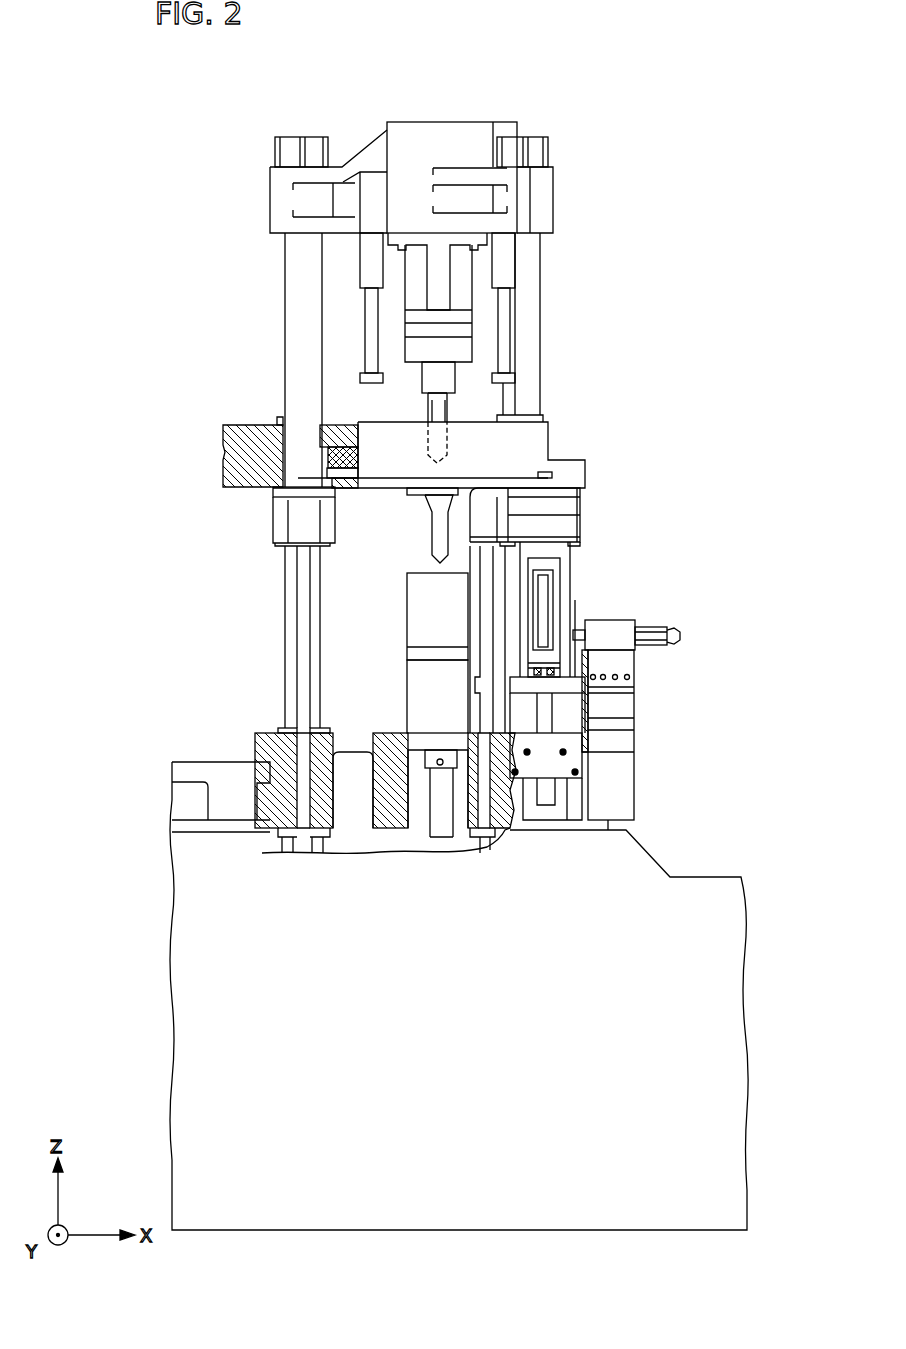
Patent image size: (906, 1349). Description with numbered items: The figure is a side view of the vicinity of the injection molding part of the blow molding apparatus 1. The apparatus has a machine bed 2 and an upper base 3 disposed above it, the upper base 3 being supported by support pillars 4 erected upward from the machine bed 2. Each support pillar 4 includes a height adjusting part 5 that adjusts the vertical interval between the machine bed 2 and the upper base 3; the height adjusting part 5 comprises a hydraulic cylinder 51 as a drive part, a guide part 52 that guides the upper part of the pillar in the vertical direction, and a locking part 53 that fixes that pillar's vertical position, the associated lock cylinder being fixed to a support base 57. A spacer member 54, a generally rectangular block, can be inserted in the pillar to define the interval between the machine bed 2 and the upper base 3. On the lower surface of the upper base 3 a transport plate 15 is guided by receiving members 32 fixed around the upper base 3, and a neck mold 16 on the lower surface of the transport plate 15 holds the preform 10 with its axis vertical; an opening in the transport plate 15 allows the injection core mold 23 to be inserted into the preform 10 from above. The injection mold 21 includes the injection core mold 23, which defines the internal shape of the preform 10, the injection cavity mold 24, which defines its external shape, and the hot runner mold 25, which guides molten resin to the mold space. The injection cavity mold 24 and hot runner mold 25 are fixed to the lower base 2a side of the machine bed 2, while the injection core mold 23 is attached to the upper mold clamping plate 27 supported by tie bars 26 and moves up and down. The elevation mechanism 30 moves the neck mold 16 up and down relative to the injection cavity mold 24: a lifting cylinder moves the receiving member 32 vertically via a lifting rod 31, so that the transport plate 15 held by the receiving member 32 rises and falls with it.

The blow molding apparatus 1 is at (744, 104).
The machine bed 2 is at (688, 876).
The lower base 2a is at (255, 745).
The upper base 3 is at (219, 409).
The support pillar 4 is at (570, 562).
The height adjusting part 5 is at (640, 689).
The preform 10 is at (432, 545).
The transport plate 15 is at (497, 474).
The neck mold 16 is at (425, 500).
The injection mold 21 is at (421, 446).
The injection core mold 23 is at (447, 415).
The injection cavity mold 24 is at (407, 608).
The hot runner mold 25 is at (407, 687).
The tie bar 26 is at (285, 296).
The upper mold clamping plate 27 is at (487, 122).
The elevation mechanism 30 is at (446, 633).
The lifting rod 31 is at (296, 698).
The receiving member 32 is at (582, 508).
The hydraulic cylinder 51 is at (556, 590).
The guide part 52 is at (557, 795).
The locking part 53 is at (656, 614).
The spacer member 54 is at (588, 708).
The support base 57 is at (636, 713).